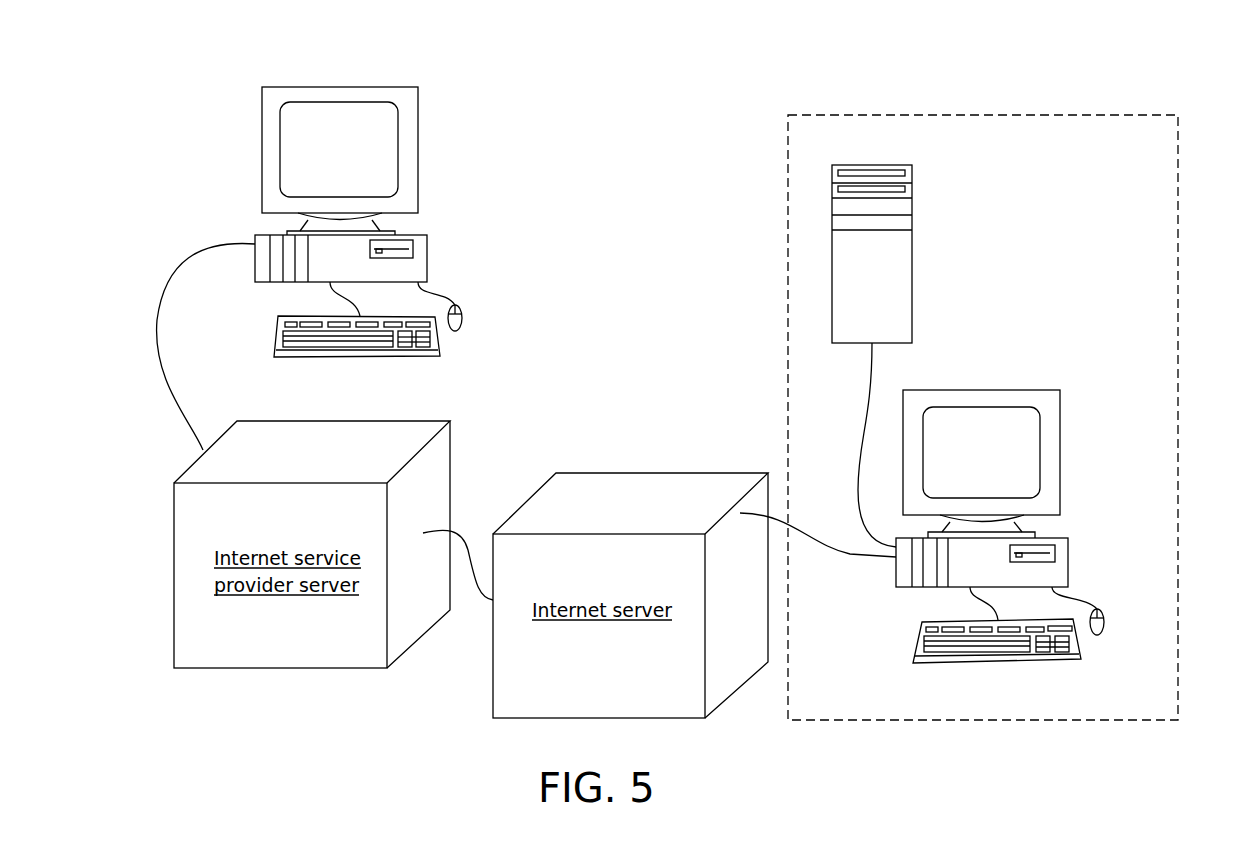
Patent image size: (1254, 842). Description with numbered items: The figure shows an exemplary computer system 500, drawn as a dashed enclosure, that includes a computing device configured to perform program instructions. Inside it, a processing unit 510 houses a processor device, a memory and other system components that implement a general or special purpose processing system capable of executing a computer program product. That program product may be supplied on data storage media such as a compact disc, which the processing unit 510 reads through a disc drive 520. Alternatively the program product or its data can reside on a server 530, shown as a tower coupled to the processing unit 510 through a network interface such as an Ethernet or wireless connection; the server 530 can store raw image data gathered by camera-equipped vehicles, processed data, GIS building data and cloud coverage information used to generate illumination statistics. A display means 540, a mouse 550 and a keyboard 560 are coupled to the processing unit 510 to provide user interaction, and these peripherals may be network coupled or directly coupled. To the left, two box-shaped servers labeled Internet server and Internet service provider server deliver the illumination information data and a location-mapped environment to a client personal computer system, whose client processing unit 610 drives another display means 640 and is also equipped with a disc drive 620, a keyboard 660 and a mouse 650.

The computer system 500 is at (850, 108).
The processing unit 510 is at (896, 580).
The disc drive 520 is at (912, 171).
The server 530 is at (912, 236).
The display means 540 is at (1027, 389).
The mouse 550 is at (1098, 636).
The keyboard 560 is at (920, 635).
The client processing unit 610 is at (255, 273).
The disc drive 620 is at (427, 237).
The display means 640 is at (385, 87).
The mouse 650 is at (459, 332).
The keyboard 660 is at (280, 331).